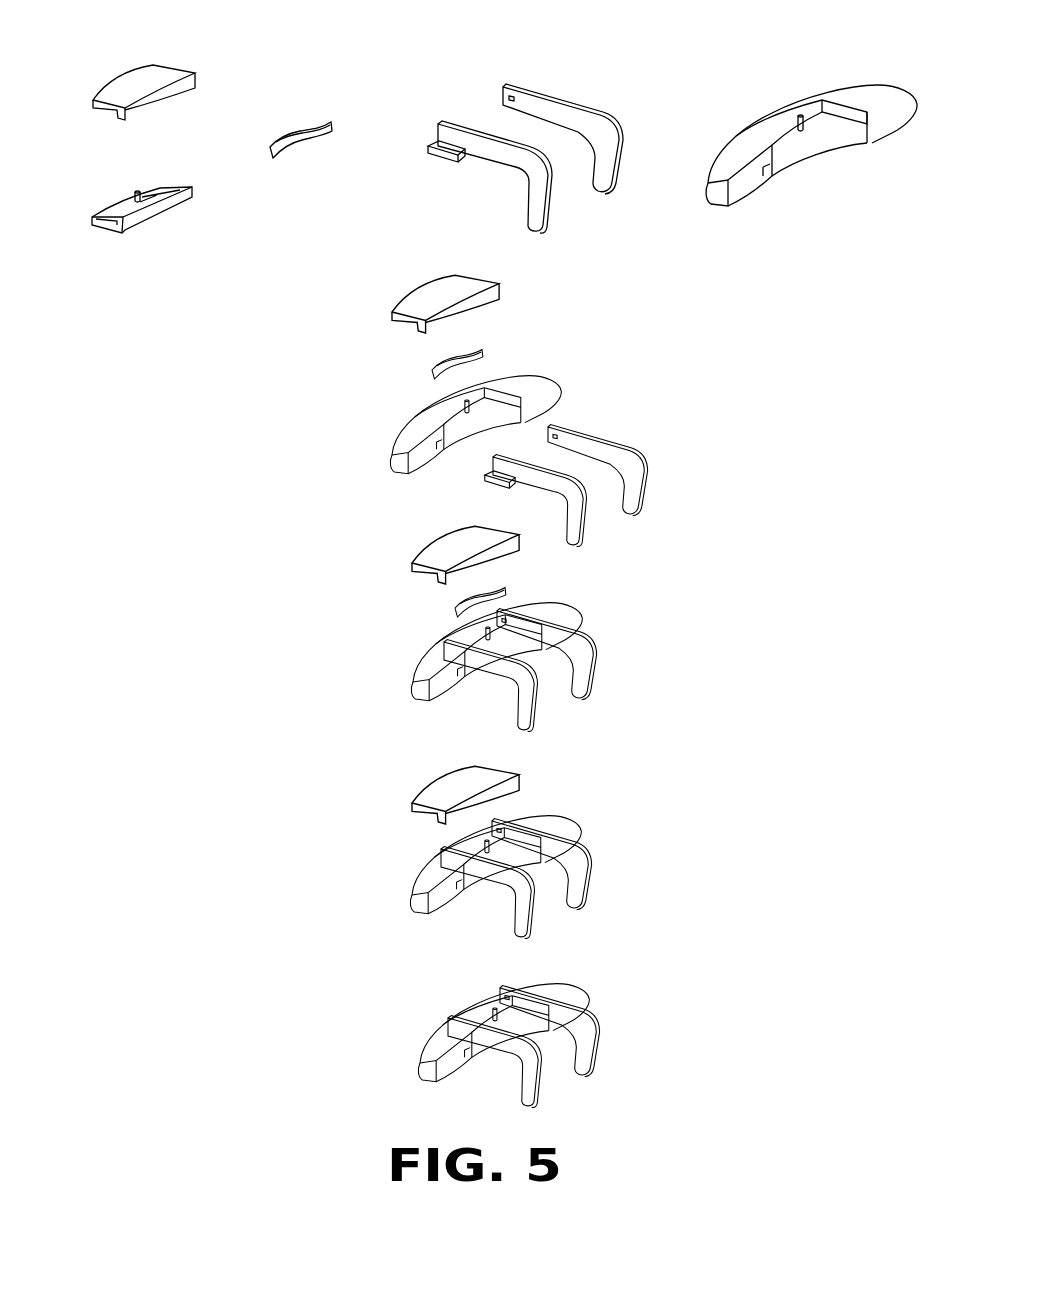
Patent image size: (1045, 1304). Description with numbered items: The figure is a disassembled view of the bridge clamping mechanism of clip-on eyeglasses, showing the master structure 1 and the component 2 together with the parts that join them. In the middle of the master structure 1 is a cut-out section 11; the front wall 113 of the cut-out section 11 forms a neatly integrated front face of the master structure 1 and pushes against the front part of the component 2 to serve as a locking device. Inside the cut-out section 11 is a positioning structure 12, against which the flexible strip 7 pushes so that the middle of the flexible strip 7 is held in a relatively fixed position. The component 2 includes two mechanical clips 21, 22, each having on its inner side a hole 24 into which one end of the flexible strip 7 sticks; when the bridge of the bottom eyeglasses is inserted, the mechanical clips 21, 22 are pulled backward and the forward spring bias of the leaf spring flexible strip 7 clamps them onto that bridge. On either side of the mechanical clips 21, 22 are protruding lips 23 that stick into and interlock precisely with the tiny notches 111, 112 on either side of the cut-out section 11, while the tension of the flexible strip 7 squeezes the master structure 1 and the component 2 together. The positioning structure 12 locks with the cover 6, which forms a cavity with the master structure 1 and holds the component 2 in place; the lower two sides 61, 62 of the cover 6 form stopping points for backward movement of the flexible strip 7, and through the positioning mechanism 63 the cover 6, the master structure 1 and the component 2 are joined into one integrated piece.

The master structure 1 is at (813, 139).
The cut-out section 11 is at (780, 138).
The tiny notch 111 is at (885, 123).
The tiny notch 112 is at (753, 210).
The front wall 113 is at (790, 118).
The positioning structure 12 is at (805, 120).
The component 2 is at (527, 148).
The mechanical clip 21 is at (466, 177).
The mechanical clip 22 is at (558, 117).
The protruding lip 23 is at (442, 163).
The hole 24 is at (508, 95).
The cover 6 is at (145, 80).
The lower side of the cover 61 is at (159, 174).
The lower side of the cover 62 is at (188, 185).
The positioning mechanism 63 is at (135, 192).
The flexible strip 7 is at (312, 123).